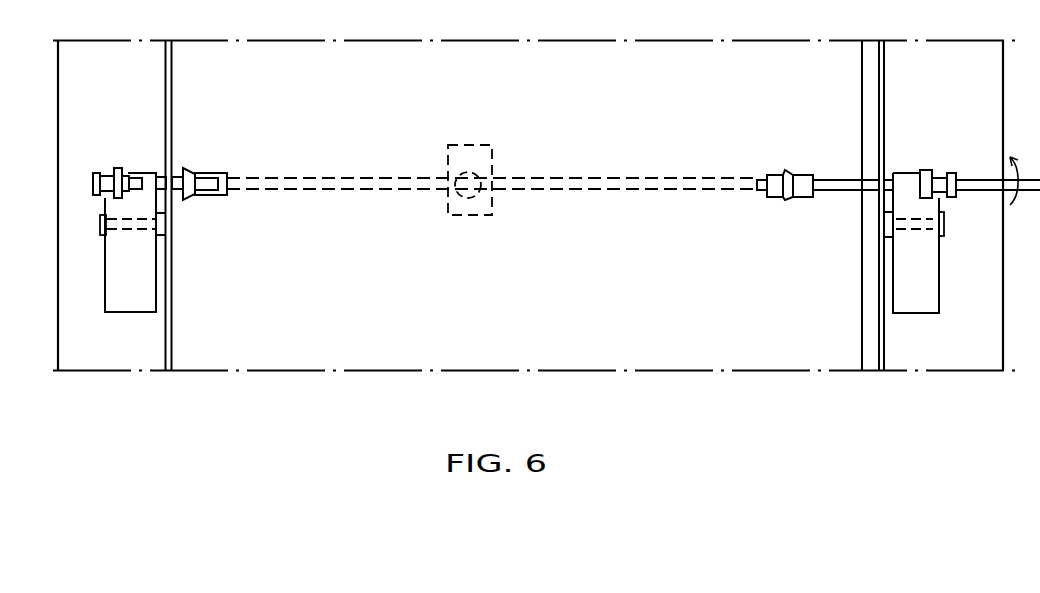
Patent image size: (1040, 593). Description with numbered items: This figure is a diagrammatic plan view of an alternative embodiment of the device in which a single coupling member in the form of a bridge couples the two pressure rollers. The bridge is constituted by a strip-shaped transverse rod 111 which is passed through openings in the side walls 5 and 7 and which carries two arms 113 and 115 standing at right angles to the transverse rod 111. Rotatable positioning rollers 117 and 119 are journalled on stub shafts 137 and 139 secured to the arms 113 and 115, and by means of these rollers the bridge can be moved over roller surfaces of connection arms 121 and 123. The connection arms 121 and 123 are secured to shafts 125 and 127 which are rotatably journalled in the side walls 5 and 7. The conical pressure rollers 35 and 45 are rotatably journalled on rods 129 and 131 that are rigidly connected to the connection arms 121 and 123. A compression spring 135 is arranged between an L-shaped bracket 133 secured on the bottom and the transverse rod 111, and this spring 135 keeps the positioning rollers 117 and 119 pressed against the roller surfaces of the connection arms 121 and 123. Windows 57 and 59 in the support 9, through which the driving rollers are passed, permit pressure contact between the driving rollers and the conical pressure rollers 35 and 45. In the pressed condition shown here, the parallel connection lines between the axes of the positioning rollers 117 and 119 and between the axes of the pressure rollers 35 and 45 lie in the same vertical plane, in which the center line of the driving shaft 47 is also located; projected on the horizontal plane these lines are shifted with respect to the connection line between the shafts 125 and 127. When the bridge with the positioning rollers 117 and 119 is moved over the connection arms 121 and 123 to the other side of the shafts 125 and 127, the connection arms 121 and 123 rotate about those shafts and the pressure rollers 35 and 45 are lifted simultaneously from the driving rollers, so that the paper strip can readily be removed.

The side wall 5 is at (168, 332).
The side wall 7 is at (880, 325).
The support 9 is at (268, 357).
The conical pressure roller 35 is at (196, 175).
The conical pressure roller 45 is at (787, 172).
The driving shaft 47 is at (988, 190).
The window 57 is at (220, 173).
The window 59 is at (775, 175).
The transverse rod 111 is at (592, 190).
The arm 113 is at (95, 183).
The arm 115 is at (953, 173).
The positioning roller 117 is at (118, 172).
The positioning roller 119 is at (925, 170).
The connection arm 121 is at (113, 285).
The connection arm 123 is at (929, 303).
The shaft 125 is at (129, 227).
The shaft 127 is at (914, 231).
The rod 129 is at (177, 180).
The rod 131 is at (836, 185).
The L-shaped bracket 133 is at (480, 145).
The compression spring 135 is at (485, 185).
The stub shaft 137 is at (105, 179).
The stub shaft 139 is at (940, 178).